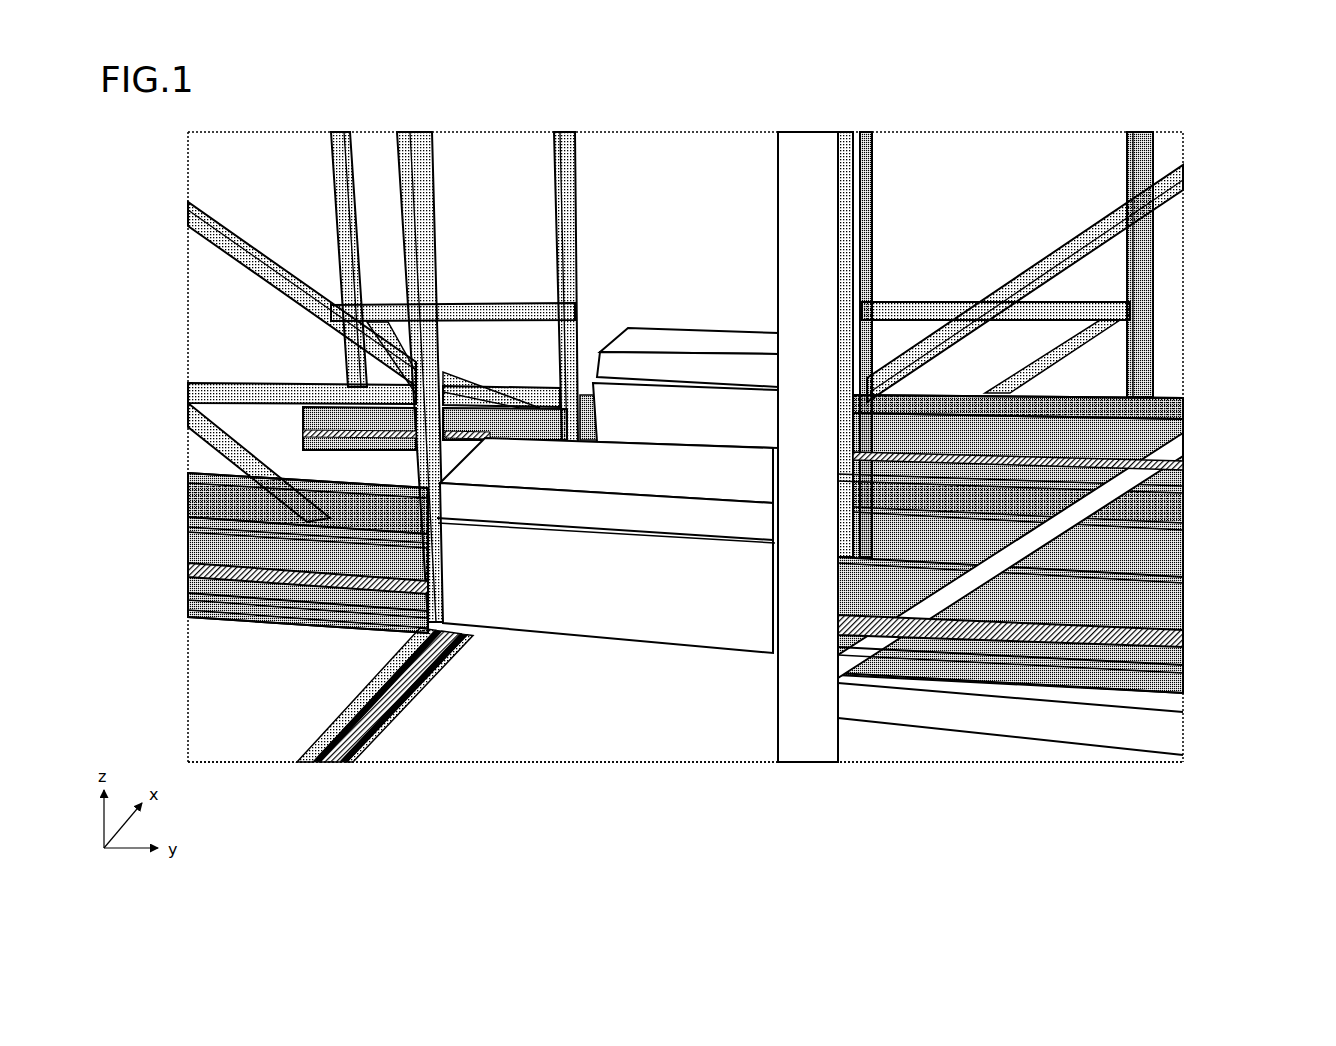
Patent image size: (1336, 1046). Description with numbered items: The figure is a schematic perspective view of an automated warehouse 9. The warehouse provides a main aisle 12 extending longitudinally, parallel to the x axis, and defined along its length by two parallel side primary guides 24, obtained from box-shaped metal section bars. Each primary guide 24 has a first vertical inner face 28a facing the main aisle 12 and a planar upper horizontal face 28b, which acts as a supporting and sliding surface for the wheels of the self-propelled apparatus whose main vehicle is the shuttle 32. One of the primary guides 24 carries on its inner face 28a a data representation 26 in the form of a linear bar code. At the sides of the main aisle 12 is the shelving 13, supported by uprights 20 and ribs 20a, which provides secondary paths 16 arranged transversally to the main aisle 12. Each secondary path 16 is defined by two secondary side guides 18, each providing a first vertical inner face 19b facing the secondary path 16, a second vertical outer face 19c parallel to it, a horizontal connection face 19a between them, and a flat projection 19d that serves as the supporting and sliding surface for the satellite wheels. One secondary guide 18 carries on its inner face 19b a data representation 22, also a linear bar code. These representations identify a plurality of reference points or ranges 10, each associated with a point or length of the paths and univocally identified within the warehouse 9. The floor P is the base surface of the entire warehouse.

The automated warehouse 9 is at (637, 118).
The reference point or range 10 is at (323, 398).
The main aisle 12 is at (585, 740).
The shelving 13 is at (518, 203).
The secondary path 16 is at (297, 462).
The secondary side guide 18 is at (1120, 427).
The horizontal connection face 19a is at (187, 517).
The first vertical inner face 19b is at (1153, 614).
The second vertical outer face 19c is at (230, 494).
The flat projection 19d is at (188, 605).
The upright 20 is at (802, 712).
The rib 20a is at (983, 600).
The data representation 22 is at (293, 427).
The primary guide 24 is at (290, 775).
The data representation 26 is at (343, 768).
The first vertical inner face 28a is at (383, 742).
The planar upper horizontal face 28b is at (305, 745).
The shuttle 32 is at (500, 602).
The floor P is at (632, 722).